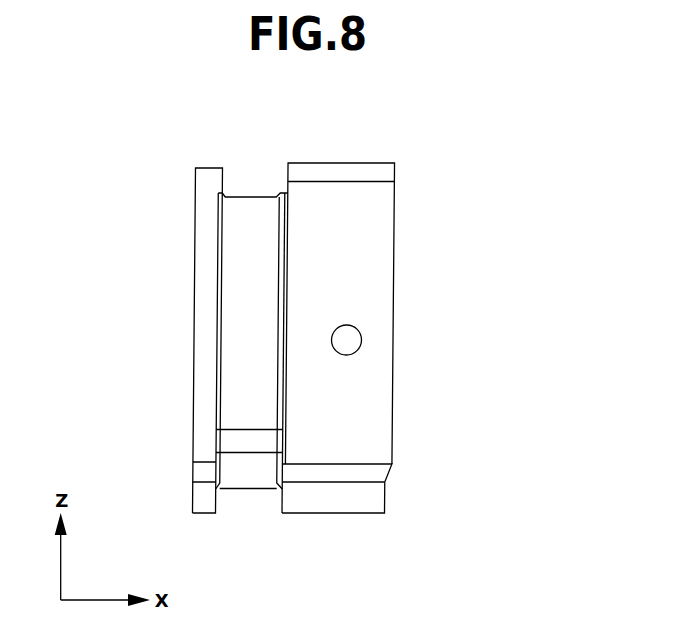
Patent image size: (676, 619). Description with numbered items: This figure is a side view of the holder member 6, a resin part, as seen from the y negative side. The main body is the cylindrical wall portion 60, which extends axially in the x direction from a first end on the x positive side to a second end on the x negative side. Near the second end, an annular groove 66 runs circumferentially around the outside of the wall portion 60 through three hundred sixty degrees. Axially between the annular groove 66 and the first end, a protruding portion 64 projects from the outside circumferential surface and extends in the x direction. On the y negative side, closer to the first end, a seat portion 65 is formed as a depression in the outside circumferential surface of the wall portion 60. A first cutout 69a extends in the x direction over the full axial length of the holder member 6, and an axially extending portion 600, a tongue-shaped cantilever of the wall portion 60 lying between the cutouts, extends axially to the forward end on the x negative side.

The holder member 6 is at (415, 155).
The cylindrical wall portion 60 is at (357, 253).
The protruding portion 64 is at (337, 173).
The seat portion 65 is at (347, 337).
The annular groove 66 is at (248, 193).
The first cutout 69a is at (334, 473).
The axially extending portion 600 is at (202, 502).